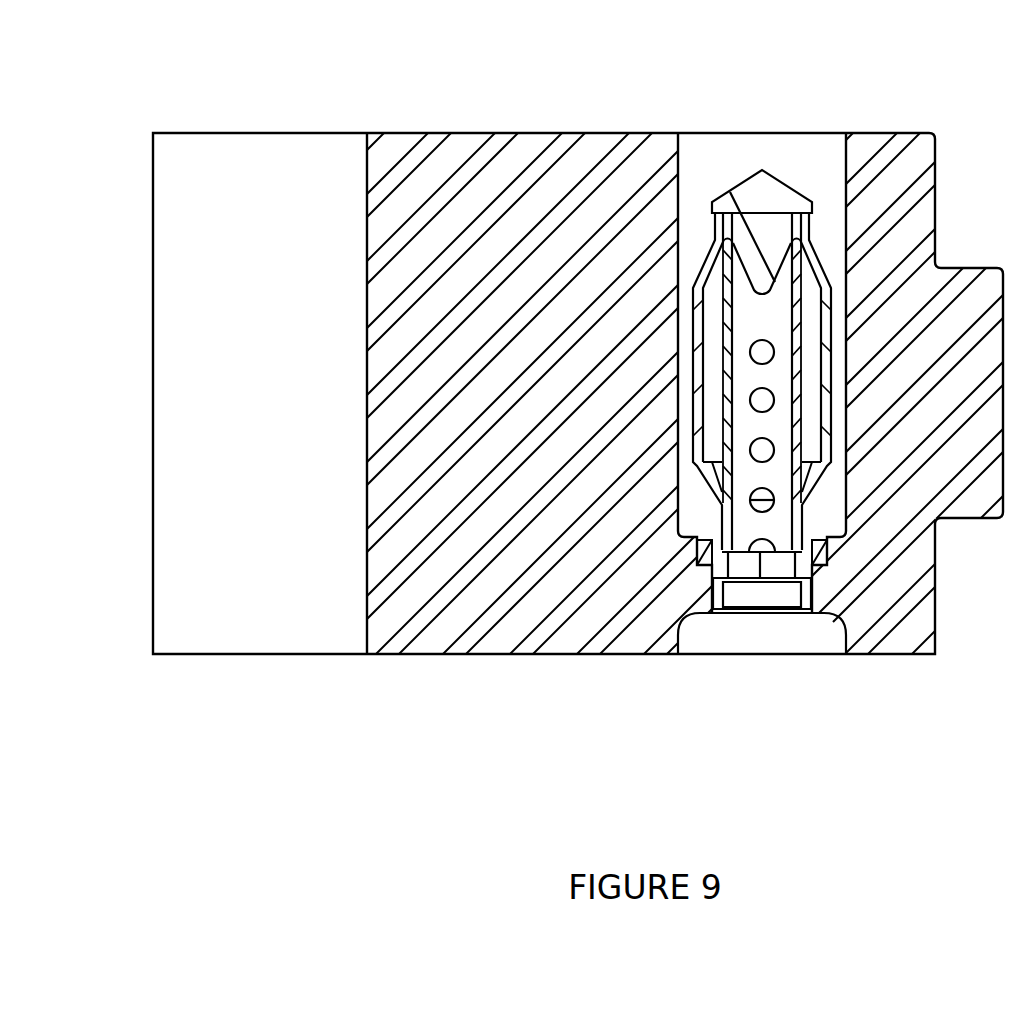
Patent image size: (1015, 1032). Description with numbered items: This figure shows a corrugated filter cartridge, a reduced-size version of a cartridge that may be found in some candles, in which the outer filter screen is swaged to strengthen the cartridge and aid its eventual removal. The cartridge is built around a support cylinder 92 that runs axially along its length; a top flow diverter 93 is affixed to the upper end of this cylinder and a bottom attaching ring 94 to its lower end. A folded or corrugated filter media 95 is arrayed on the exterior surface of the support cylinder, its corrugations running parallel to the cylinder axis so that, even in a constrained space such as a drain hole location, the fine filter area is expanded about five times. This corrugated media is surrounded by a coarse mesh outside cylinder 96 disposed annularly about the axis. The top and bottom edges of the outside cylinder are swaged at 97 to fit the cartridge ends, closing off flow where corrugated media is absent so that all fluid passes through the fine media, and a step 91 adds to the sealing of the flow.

The step 91 is at (692, 578).
The support cylinder 92 is at (800, 300).
The top flow diverter 93 is at (767, 205).
The bottom attaching ring 94 is at (814, 555).
The folded or corrugated filter media 95 is at (712, 368).
The outside cylinder 96 is at (822, 413).
The swaging 97 is at (705, 266).